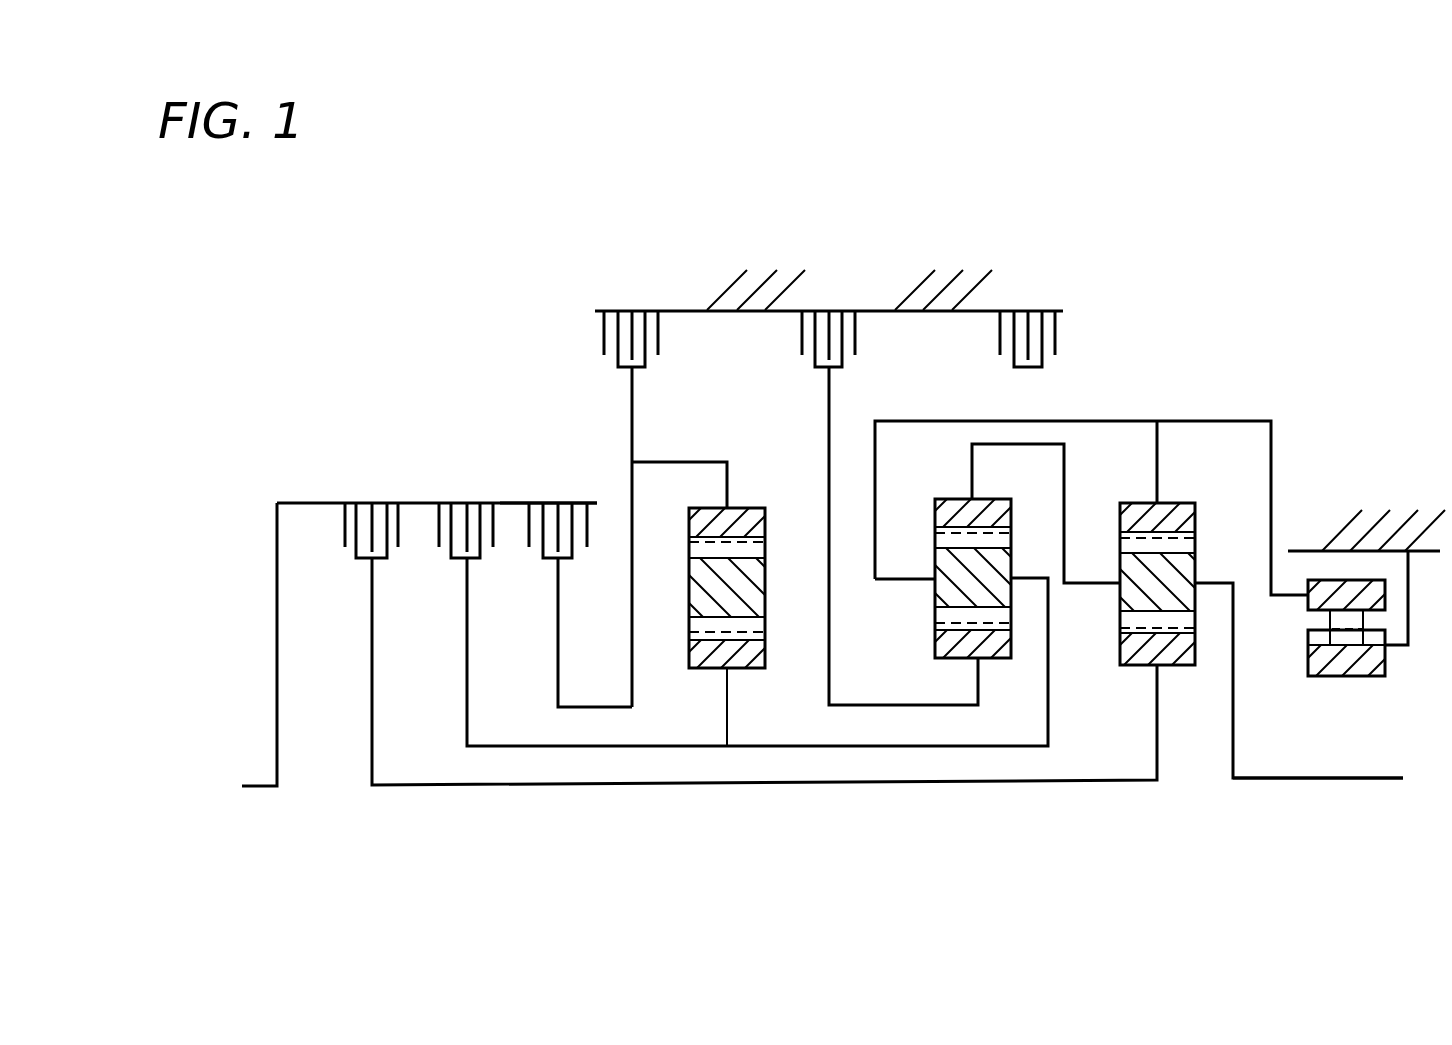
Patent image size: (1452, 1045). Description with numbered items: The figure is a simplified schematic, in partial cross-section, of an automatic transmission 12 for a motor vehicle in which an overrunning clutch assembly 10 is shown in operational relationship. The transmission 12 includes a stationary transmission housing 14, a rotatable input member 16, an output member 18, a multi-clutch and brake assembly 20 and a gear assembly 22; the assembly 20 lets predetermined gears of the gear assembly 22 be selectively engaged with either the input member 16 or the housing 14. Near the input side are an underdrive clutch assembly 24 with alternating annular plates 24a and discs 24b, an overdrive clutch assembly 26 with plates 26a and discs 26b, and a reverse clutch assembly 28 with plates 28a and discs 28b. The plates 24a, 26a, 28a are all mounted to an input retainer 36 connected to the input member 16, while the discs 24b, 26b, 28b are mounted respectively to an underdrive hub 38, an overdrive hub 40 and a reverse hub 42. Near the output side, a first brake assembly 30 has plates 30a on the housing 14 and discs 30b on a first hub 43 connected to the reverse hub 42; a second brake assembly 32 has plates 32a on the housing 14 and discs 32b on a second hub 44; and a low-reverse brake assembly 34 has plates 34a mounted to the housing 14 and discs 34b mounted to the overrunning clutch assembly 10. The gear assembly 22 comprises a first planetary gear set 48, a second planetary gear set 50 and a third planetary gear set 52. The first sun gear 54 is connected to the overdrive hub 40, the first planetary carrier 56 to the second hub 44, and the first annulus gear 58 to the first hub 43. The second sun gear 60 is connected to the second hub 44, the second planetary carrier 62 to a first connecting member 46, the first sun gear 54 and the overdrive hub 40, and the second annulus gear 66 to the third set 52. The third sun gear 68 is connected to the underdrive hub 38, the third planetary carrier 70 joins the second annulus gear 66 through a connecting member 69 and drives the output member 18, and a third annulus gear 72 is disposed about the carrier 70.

The overrunning clutch assembly 10 is at (1388, 661).
The automatic transmission 12 is at (1277, 333).
The transmission housing 14 is at (680, 310).
The input member 16 is at (242, 786).
The output member 18 is at (1305, 778).
The multi-clutch and brake assembly 20 is at (412, 500).
The gear assembly 22 is at (1183, 496).
The underdrive clutch assembly 24 is at (336, 524).
The annular plates 24a is at (371, 522).
The annular discs 24b is at (358, 534).
The overdrive clutch assembly 26 is at (467, 512).
The annular plates 26a is at (470, 525).
The annular discs 26b is at (450, 532).
The reverse clutch assembly 28 is at (573, 511).
The annular plates 28a is at (560, 517).
The annular discs 28b is at (574, 532).
The first brake assembly 30 is at (641, 298).
The annular plates 30a is at (604, 330).
The annular discs 30b is at (648, 330).
The second brake assembly 32 is at (836, 298).
The annular plates 32a is at (802, 330).
The annular discs 32b is at (845, 330).
The low-reverse brake assembly 34 is at (1033, 298).
The annular plates 34a is at (1000, 330).
The annular discs 34b is at (1043, 330).
The input retainer 36 is at (510, 500).
The underdrive hub 38 is at (372, 738).
The overdrive hub 40 is at (467, 690).
The reverse hub 42 is at (558, 648).
The first hub 43 is at (633, 385).
The second hub 44 is at (829, 385).
The first connecting member 46 is at (1180, 421).
The first planetary gear set 48 is at (743, 609).
The second planetary gear set 50 is at (949, 562).
The third planetary gear set 52 is at (1181, 553).
The first sun gear 54 is at (710, 665).
The first planetary carrier 56 is at (697, 583).
The first annulus gear 58 is at (742, 525).
The second sun gear 60 is at (970, 655).
The second planetary carrier 62 is at (942, 597).
The second annulus gear 66 is at (1003, 515).
The third sun gear 68 is at (1148, 663).
The connecting member 69 is at (1100, 585).
The third planetary carrier 70 is at (1178, 575).
The third annulus gear 72 is at (1185, 517).